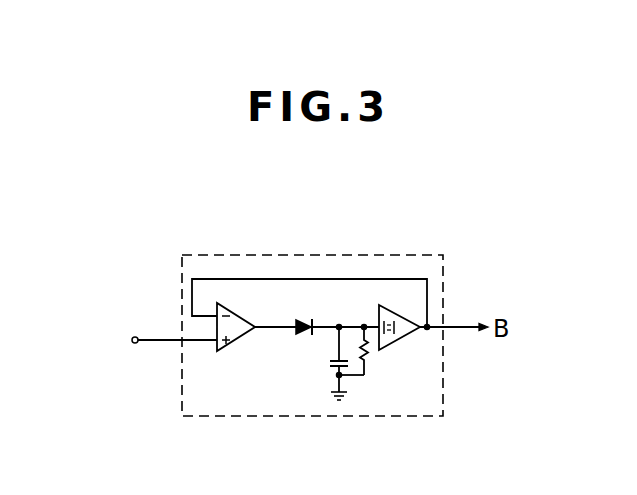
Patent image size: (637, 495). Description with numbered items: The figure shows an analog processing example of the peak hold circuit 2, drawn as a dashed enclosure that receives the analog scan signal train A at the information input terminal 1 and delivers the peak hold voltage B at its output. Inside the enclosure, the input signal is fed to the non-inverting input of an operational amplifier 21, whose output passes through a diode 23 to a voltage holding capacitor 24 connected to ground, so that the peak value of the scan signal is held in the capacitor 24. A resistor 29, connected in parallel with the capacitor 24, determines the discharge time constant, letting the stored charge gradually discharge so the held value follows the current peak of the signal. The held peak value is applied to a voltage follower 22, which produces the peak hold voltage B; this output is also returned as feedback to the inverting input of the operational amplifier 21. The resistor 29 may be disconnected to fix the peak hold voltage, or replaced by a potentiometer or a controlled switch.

The information input terminal 1 is at (162, 331).
The peak hold circuit 2 is at (345, 255).
The operational amplifier 21 is at (231, 347).
The voltage follower 22 is at (396, 340).
The diode 23 is at (300, 336).
The voltage holding capacitor 24 is at (330, 366).
The resistor 29 is at (367, 356).